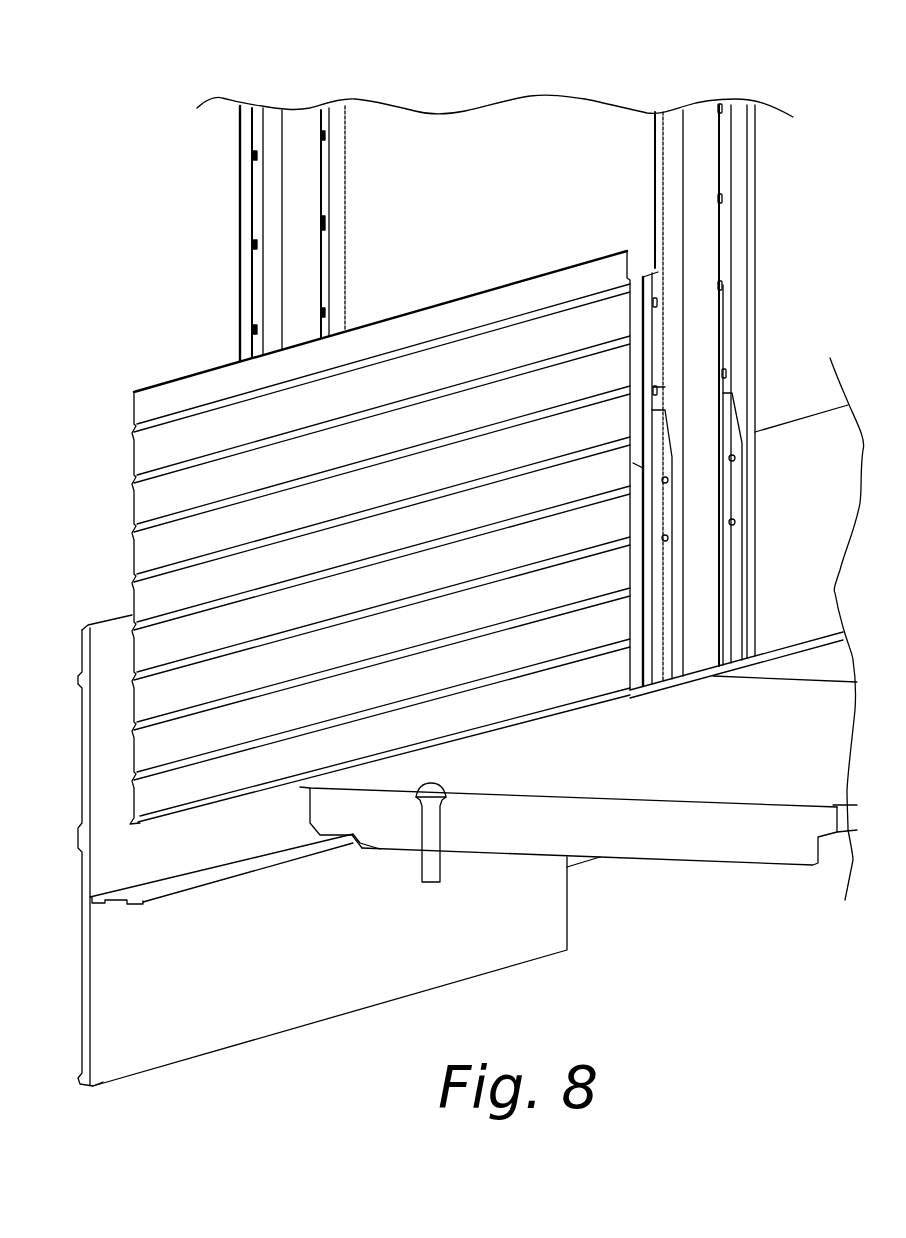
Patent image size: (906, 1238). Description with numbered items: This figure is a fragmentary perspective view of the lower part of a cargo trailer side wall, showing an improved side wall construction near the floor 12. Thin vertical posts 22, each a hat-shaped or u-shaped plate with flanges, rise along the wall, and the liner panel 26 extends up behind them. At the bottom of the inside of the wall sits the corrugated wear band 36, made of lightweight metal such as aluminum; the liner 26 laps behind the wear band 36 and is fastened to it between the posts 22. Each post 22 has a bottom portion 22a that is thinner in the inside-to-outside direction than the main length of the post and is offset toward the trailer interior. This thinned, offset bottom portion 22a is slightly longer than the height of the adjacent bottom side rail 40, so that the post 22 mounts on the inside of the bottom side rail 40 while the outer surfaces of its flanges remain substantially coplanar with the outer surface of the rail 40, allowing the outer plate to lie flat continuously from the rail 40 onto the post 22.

The floor 12 is at (778, 778).
The vertical post 22 is at (292, 120).
The bottom portion of post 22a is at (700, 517).
The liner panel 26 is at (500, 194).
The wear band 36 is at (162, 460).
The bottom side rail 40 is at (170, 870).